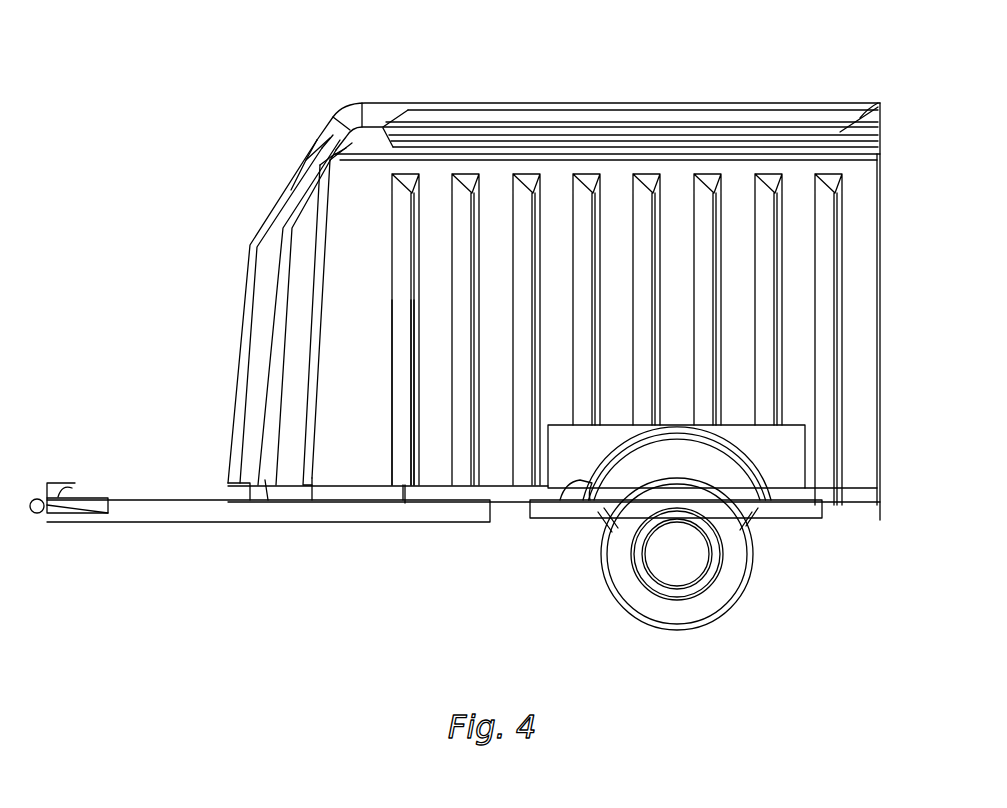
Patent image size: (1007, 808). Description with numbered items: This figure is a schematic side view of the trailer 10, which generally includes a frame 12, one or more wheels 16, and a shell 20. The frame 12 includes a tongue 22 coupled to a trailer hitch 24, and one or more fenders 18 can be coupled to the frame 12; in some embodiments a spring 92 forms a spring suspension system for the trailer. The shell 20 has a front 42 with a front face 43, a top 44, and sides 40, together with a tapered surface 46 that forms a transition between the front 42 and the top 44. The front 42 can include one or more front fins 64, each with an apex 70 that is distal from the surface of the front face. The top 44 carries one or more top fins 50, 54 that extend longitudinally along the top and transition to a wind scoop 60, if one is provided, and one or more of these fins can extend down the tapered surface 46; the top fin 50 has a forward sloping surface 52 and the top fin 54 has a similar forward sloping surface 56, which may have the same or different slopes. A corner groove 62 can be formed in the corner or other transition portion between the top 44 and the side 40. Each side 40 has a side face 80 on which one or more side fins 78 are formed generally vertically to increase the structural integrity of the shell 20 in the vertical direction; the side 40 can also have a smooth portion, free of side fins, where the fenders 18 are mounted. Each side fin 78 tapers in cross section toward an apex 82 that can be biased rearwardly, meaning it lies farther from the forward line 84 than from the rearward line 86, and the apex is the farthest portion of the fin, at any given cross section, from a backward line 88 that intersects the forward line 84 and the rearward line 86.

The trailer 10 is at (150, 268).
The frame 12 is at (247, 532).
The wheel 16 is at (610, 592).
The fender 18 is at (568, 484).
The shell 20 is at (381, 98).
The tongue 22 is at (163, 524).
The trailer hitch 24 is at (88, 500).
The side 40 is at (363, 460).
The front 42 is at (236, 349).
The front face 43 is at (258, 370).
The top 44 is at (528, 98).
The tapered surface 46 is at (275, 217).
The top fin 50 is at (672, 104).
The forward sloping surface 52 is at (295, 182).
The top fin 54 is at (450, 112).
The forward sloping surface 56 is at (308, 147).
The wind scoop 60 is at (881, 118).
The corner groove 62 is at (867, 142).
The front fin 64 is at (272, 488).
The apex 70 is at (290, 273).
The side fin 78 is at (408, 490).
The side face 80 is at (338, 468).
The apex 82 is at (406, 464).
The forward line 84 is at (390, 437).
The rearward line 86 is at (414, 434).
The backward line 88 is at (403, 176).
The spring 92 is at (755, 526).